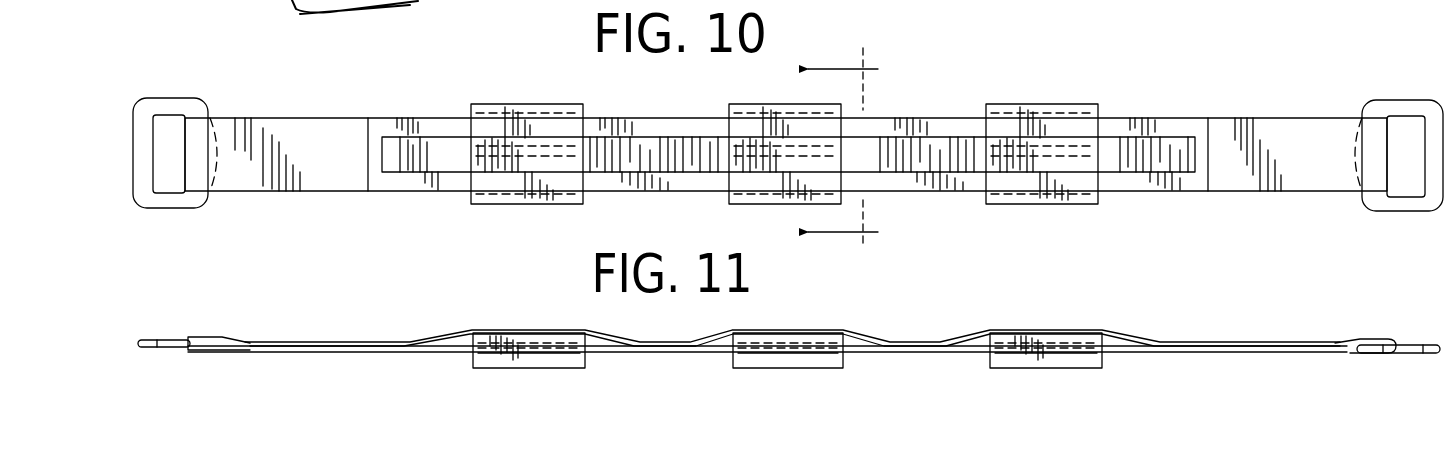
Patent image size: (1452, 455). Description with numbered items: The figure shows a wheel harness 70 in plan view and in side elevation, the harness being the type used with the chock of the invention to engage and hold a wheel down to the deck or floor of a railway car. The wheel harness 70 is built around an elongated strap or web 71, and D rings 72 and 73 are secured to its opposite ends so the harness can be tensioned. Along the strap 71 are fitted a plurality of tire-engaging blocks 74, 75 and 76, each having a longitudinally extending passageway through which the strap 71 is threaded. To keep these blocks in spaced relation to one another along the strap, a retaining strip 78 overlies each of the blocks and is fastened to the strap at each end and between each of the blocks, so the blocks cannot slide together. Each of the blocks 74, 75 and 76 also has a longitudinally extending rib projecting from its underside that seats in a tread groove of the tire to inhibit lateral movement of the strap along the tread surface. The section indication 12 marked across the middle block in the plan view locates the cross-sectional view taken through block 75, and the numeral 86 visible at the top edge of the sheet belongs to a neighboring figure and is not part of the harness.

In FIG. 10, the section line 12- 12 is at (850, 150).
In FIG. 10, the wheel harness 70 is at (884, 117).
In FIG. 10, the strap 71 is at (973, 183).
In FIG. 11, the strap 71 is at (453, 355).
In FIG. 10, the D ring 72 is at (172, 208).
In FIG. 11, the D ring 72 is at (165, 352).
In FIG. 10, the D ring 73 is at (1420, 212).
In FIG. 11, the D ring 73 is at (1408, 354).
In FIG. 10, the tire-engaging block 74 is at (510, 115).
In FIG. 11, the tire-engaging block 74 is at (588, 362).
In FIG. 10, the tire-engaging block 75 is at (772, 112).
In FIG. 11, the tire-engaging block 75 is at (847, 362).
In FIG. 10, the tire-engaging block 76 is at (1032, 105).
In FIG. 11, the tire-engaging block 76 is at (1105, 360).
In FIG. 10, the retaining strip 78 is at (403, 157).
In FIG. 11, the retaining strip 78 is at (613, 342).
In FIG. 10, the cylindrical member 86 is at (366, 0).